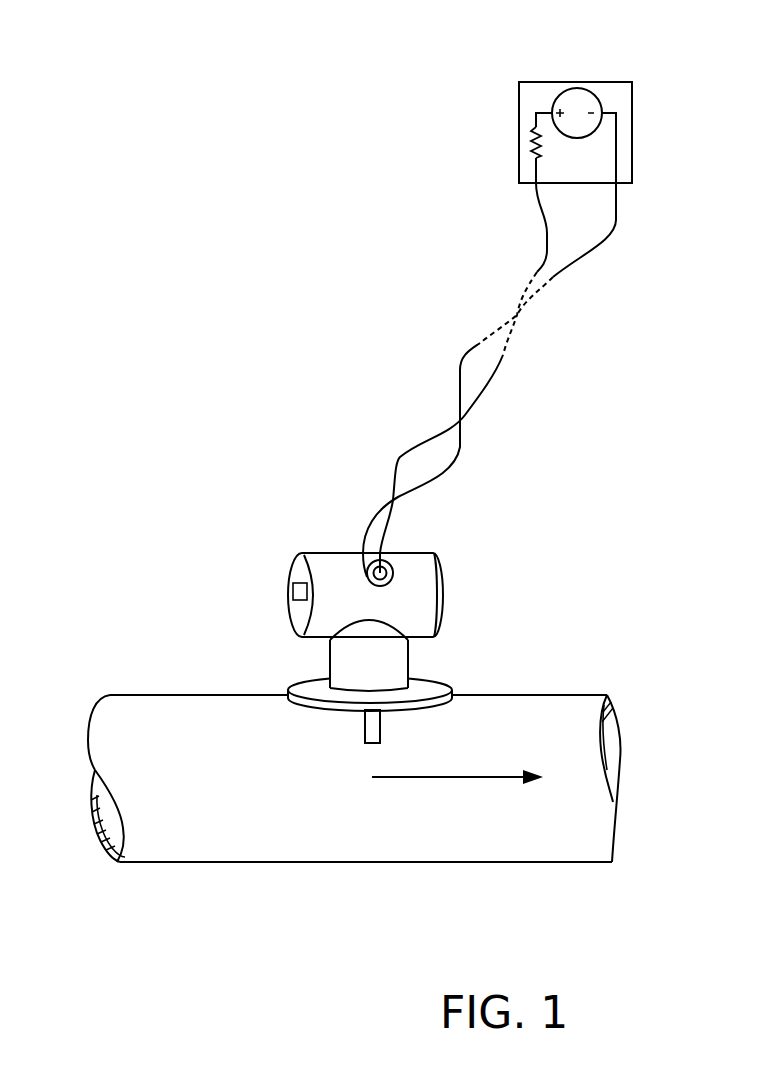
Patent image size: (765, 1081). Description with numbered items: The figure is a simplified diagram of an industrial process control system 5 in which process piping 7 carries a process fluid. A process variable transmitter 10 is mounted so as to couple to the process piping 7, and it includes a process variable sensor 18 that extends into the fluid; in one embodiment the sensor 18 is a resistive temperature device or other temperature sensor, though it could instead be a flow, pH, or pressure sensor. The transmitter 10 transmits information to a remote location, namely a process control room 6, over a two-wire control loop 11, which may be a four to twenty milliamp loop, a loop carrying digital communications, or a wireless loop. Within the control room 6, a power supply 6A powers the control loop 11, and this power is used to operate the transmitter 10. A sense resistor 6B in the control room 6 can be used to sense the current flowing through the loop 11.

The industrial process control system 5 is at (220, 262).
The process control room 6 is at (622, 78).
The power supply 6A is at (577, 88).
The sense resistor 6B is at (530, 143).
The process piping 7 is at (525, 725).
The process variable transmitter 10 is at (470, 575).
The two-wire control loop 11 is at (450, 452).
The process variable sensor 18 is at (365, 742).